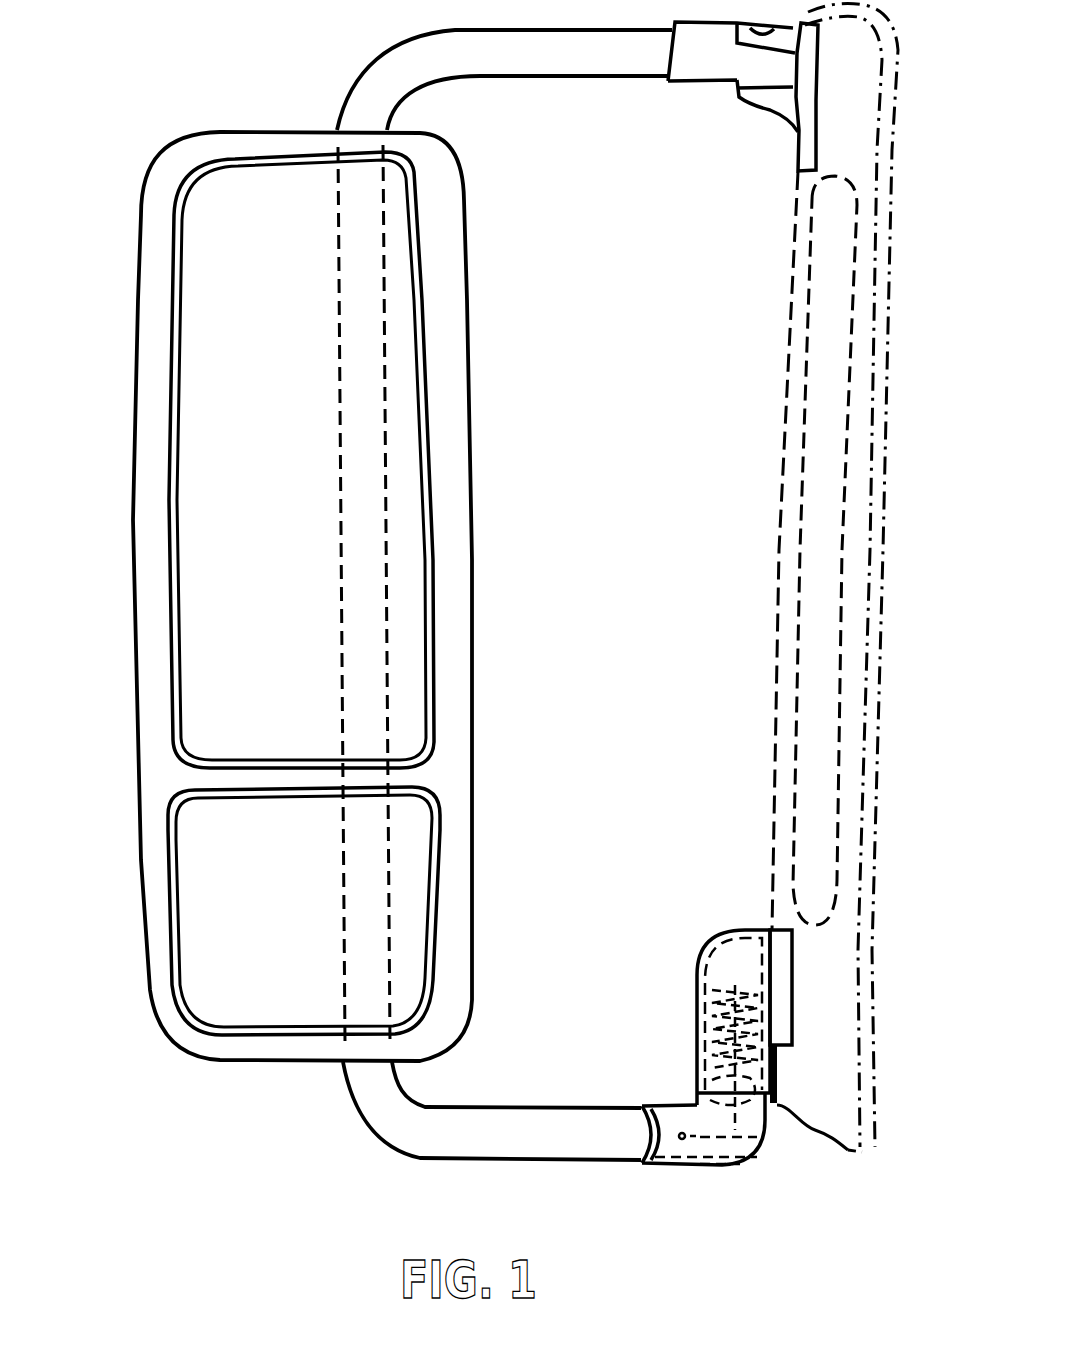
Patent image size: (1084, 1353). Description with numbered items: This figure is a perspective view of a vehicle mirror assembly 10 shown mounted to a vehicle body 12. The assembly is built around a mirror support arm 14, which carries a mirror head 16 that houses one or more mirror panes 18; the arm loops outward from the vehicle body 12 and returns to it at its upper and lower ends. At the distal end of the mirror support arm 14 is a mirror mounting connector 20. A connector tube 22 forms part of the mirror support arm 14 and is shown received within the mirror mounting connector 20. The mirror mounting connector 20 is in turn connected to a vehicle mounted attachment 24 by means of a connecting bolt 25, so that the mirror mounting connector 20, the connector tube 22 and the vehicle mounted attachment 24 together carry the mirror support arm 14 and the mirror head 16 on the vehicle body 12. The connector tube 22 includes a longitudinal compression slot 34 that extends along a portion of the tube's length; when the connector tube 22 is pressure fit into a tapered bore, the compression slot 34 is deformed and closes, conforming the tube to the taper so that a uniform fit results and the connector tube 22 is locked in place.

The vehicle mirror assembly 10 is at (242, 97).
The vehicle body 12 is at (816, 1040).
The mirror support arm 14 is at (385, 1095).
The mirror head 16 is at (143, 508).
The mirror panes 18 is at (180, 327).
The mirror mounting connector 20 is at (672, 1150).
The connector tube 22 is at (683, 1114).
The vehicle mounted attachment 24 is at (703, 968).
The connecting bolt 25 is at (692, 1060).
The longitudinal compression slot 34 is at (735, 1170).